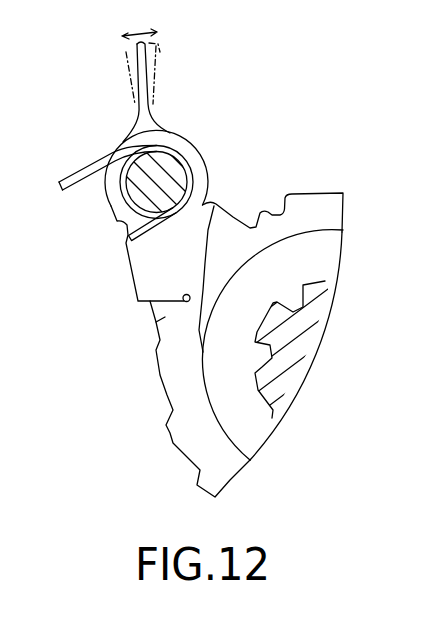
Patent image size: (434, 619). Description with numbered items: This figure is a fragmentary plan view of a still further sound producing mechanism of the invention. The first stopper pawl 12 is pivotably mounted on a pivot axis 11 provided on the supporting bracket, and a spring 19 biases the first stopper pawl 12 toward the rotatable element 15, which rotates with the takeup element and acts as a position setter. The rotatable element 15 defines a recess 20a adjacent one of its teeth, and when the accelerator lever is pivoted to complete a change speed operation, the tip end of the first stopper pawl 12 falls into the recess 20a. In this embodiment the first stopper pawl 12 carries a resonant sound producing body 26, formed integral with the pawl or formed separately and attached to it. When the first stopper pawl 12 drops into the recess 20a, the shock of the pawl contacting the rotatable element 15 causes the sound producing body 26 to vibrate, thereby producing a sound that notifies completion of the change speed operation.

The pivot axis 11 is at (150, 182).
The first stopper pawl 12 is at (140, 302).
The rotatable element 15 is at (157, 323).
The spring 19 is at (78, 172).
The recess 20a is at (182, 301).
The resonant sound producing body 26 is at (143, 68).